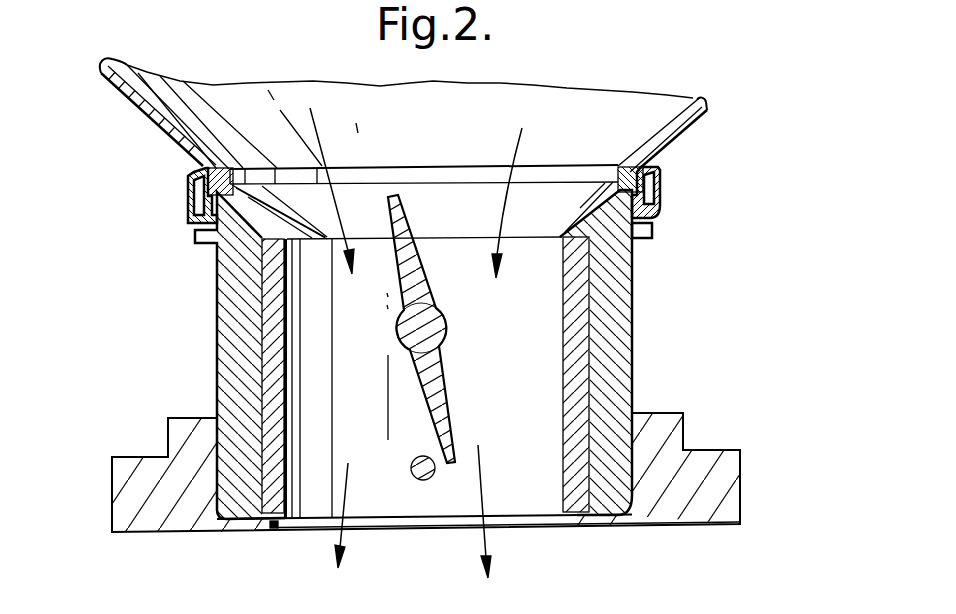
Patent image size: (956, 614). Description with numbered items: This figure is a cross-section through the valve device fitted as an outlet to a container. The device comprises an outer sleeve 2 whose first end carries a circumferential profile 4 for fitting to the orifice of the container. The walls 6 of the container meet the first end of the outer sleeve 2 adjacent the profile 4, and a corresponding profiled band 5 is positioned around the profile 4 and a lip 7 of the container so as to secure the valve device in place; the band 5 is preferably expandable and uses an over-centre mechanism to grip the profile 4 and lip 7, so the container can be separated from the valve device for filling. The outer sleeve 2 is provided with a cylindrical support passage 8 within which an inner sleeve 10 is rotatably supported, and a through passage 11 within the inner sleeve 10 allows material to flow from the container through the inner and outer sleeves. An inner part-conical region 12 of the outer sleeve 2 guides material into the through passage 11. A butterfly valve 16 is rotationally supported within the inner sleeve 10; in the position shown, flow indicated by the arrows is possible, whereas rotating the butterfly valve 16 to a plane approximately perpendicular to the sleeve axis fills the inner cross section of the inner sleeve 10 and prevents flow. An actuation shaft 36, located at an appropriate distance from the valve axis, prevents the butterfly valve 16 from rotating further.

The outer sleeve 2 is at (613, 328).
The profile 4 is at (652, 226).
The profiled band 5 is at (187, 191).
The walls 6 is at (152, 100).
The lip 7 is at (660, 178).
The cylindrical support passage 8 is at (588, 382).
The inner sleeve 10 is at (272, 317).
The through passage 11 is at (528, 497).
The inner part-conical region 12 is at (230, 246).
The butterfly valve 16 is at (418, 355).
The actuation shaft 36 is at (423, 480).